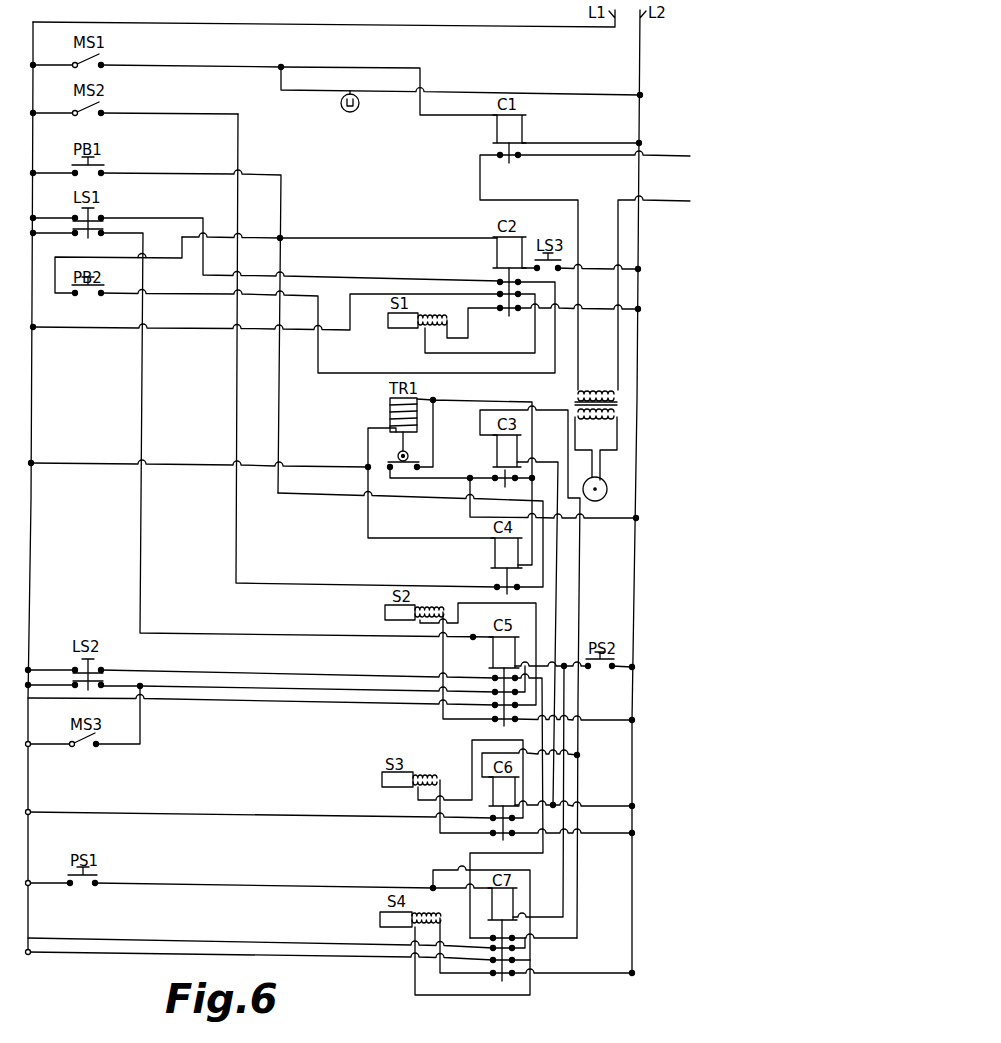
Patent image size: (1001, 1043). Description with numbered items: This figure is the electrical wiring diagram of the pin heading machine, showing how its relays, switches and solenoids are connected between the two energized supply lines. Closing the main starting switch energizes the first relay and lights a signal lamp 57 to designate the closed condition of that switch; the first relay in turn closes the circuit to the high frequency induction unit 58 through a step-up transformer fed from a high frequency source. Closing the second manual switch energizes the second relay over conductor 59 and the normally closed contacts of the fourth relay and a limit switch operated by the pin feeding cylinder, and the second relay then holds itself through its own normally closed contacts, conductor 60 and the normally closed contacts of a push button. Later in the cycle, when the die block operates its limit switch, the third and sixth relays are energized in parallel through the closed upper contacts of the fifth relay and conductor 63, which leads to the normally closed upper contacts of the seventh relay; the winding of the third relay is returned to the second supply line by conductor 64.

The signal lamp 57 is at (338, 114).
The high frequency induction unit 58 is at (601, 482).
The conductor 59 is at (237, 418).
The conductor 60 is at (358, 372).
The conductor 63 is at (543, 790).
The conductor 64 is at (558, 622).